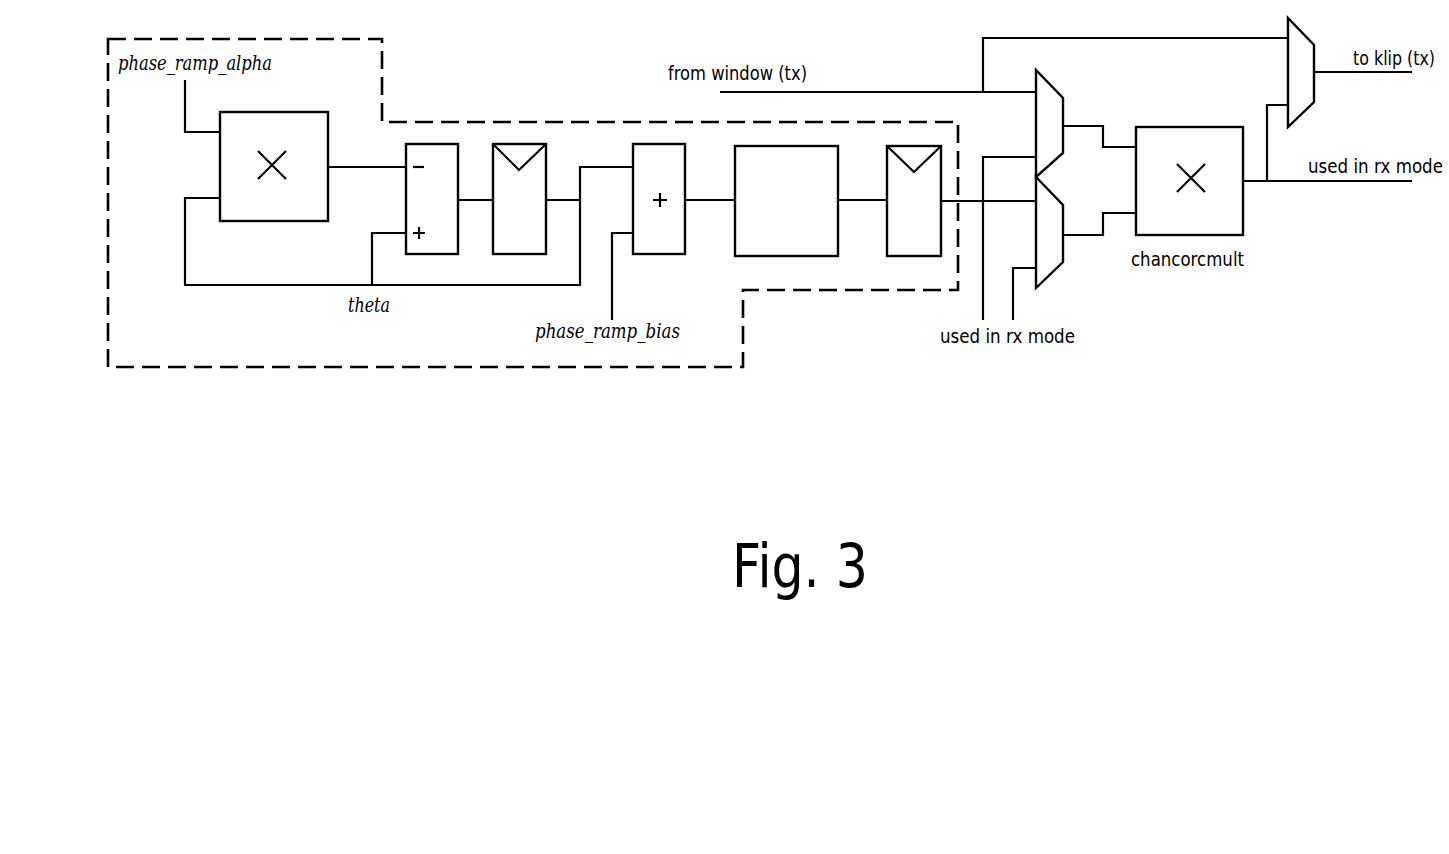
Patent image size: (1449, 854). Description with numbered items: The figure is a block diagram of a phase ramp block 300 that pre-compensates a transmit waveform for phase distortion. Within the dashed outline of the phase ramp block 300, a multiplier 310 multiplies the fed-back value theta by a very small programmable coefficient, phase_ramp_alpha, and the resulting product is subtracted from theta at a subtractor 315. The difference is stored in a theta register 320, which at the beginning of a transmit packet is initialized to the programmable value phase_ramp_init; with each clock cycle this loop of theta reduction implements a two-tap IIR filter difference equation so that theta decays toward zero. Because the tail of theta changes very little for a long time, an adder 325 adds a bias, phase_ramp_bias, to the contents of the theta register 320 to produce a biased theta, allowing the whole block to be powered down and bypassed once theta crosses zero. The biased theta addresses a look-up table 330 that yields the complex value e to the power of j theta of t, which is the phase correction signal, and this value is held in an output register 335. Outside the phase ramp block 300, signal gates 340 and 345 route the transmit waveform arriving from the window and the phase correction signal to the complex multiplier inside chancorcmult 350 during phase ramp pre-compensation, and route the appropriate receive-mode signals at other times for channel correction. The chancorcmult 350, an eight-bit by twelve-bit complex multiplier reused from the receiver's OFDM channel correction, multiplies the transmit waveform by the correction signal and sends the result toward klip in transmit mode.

The phase ramp block 300 is at (187, 336).
The multiplier 310 is at (320, 212).
The subtractor 315 is at (418, 254).
The theta register 320 is at (505, 254).
The adder 325 is at (645, 254).
The look-up table 330 is at (829, 242).
The output register 335 is at (899, 256).
The signal gate 340 is at (1047, 277).
The signal gate 345 is at (1048, 84).
The chancorcmult 350 is at (1235, 230).